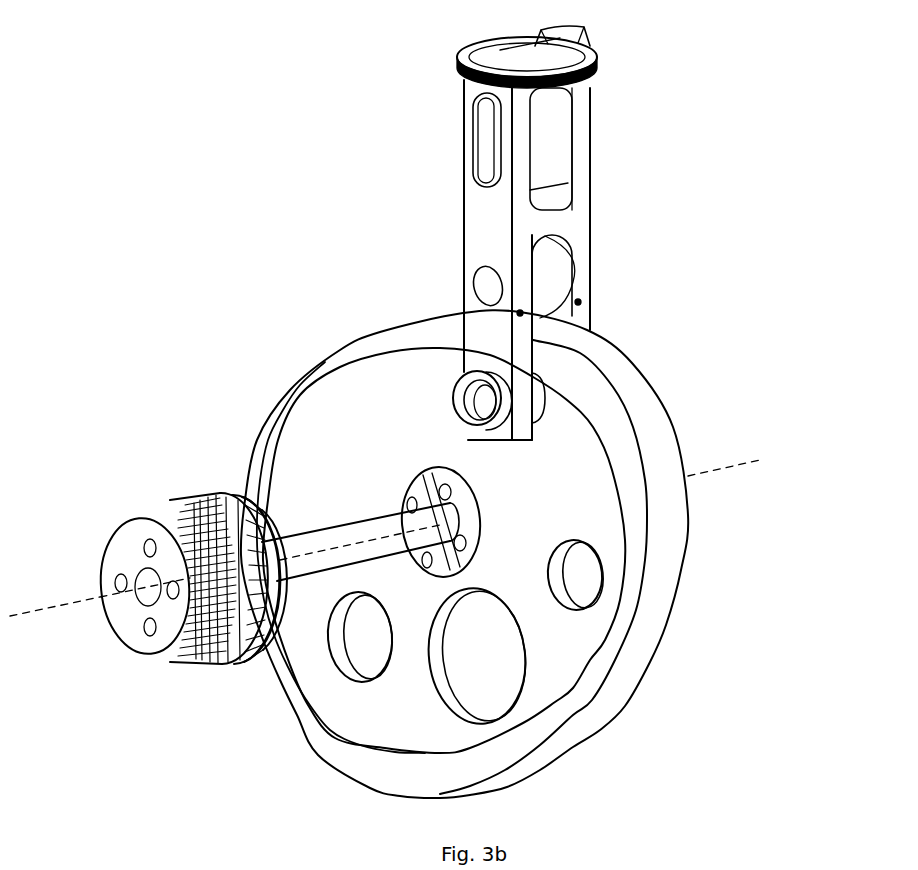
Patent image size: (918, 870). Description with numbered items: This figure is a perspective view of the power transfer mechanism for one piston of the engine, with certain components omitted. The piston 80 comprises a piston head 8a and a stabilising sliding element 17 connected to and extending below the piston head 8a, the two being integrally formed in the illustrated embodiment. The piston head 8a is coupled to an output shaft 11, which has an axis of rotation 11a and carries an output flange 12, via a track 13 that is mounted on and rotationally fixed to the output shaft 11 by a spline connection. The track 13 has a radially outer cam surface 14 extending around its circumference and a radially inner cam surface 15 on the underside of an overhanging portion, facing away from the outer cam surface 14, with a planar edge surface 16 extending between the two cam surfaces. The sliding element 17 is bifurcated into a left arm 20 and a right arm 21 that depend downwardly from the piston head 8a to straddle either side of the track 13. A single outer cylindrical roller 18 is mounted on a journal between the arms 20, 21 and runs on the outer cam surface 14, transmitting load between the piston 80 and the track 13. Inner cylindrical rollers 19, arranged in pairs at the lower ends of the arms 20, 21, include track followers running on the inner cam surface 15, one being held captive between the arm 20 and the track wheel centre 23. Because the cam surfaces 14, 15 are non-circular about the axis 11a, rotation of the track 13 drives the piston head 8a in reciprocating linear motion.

The piston head 8a is at (598, 62).
The piston 80 is at (575, 145).
The stabilising sliding element 17 is at (480, 225).
The outer cylindrical roller 18 is at (548, 268).
The right arm 21 is at (582, 315).
The left arm 20 is at (485, 345).
The track 13 is at (592, 410).
The axis of rotation 11a is at (760, 460).
The output shaft 11 is at (340, 537).
The inner cylindrical rollers 19 is at (493, 432).
The output flange 12 is at (133, 642).
The inner cam surface 15 is at (330, 708).
The planar edge surface 16 is at (378, 770).
The outer cam surface 14 is at (648, 640).
The track wheel centre 23 is at (547, 683).